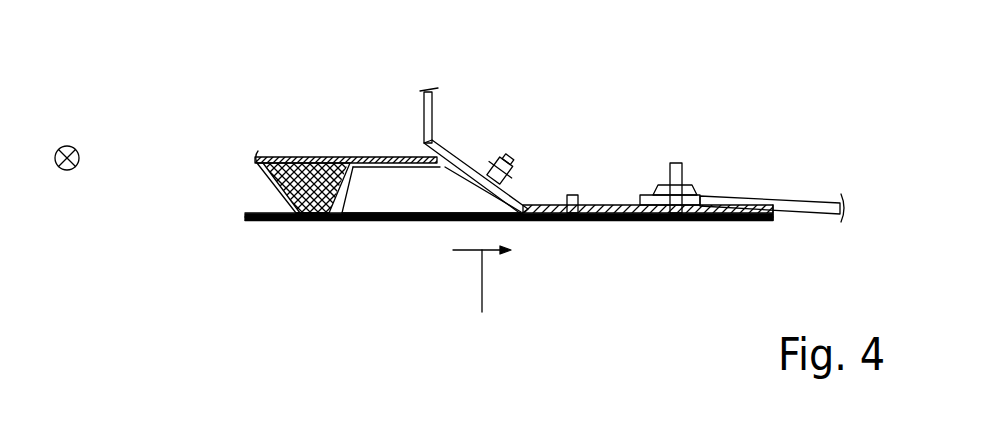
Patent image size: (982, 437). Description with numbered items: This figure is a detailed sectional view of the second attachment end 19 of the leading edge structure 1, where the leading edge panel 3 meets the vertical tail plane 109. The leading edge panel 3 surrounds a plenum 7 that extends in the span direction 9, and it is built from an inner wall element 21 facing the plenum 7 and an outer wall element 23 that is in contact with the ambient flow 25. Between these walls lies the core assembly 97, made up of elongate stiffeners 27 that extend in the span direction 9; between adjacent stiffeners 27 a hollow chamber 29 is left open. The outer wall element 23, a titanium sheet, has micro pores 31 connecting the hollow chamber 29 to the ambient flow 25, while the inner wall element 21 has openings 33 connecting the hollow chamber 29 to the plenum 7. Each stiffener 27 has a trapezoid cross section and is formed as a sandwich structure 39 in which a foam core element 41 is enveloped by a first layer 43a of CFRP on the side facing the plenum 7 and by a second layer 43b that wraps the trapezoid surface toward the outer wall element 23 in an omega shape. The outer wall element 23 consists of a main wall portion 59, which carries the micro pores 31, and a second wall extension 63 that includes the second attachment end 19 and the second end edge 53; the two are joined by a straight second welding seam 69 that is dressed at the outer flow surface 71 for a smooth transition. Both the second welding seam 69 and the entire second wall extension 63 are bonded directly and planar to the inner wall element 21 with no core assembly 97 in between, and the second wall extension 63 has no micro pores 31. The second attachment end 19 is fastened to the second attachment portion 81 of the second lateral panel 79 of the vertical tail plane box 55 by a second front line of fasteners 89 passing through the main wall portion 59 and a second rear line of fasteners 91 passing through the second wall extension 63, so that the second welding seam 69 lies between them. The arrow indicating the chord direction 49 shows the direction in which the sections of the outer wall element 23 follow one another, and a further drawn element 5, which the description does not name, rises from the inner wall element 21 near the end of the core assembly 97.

The leading edge structure 1 is at (187, 129).
The leading edge panel 3 is at (244, 111).
The bracket 5 is at (434, 121).
The plenum 7 is at (284, 111).
The span direction 9 is at (65, 146).
The second attachment end 19 is at (555, 220).
The inner wall element 21 is at (380, 157).
The outer wall element 23 is at (418, 220).
The ambient flow 25 is at (315, 258).
The elongate stiffener 27 is at (221, 188).
The core assembly 97 is at (262, 173).
The hollow chamber 29 is at (417, 205).
The micro pores 31 is at (379, 220).
The openings 33 is at (410, 157).
The sandwich structure 39 is at (323, 128).
The core element 41 is at (270, 199).
The first layer 43a is at (305, 157).
The second layer 43b is at (343, 218).
The chord direction 49 is at (482, 297).
The second end edge 53 is at (773, 220).
The vertical tail plane box 55 is at (791, 161).
The main wall portion 59 is at (438, 220).
The second wall extension 63 is at (700, 220).
The second welding seam 69 is at (627, 220).
The outer flow surface 71 is at (648, 220).
The second lateral panel 79 is at (791, 161).
The second attachment portion 81 is at (798, 203).
The second front line of fasteners 89 is at (575, 220).
The second rear line of fasteners 91 is at (672, 220).
The vertical tail plane 109 is at (791, 161).